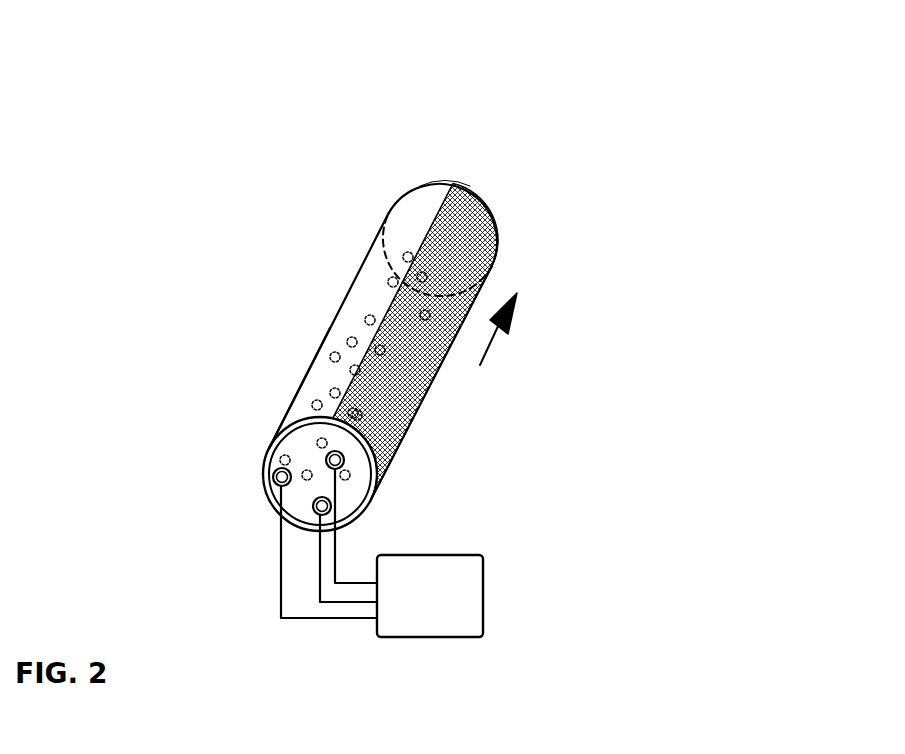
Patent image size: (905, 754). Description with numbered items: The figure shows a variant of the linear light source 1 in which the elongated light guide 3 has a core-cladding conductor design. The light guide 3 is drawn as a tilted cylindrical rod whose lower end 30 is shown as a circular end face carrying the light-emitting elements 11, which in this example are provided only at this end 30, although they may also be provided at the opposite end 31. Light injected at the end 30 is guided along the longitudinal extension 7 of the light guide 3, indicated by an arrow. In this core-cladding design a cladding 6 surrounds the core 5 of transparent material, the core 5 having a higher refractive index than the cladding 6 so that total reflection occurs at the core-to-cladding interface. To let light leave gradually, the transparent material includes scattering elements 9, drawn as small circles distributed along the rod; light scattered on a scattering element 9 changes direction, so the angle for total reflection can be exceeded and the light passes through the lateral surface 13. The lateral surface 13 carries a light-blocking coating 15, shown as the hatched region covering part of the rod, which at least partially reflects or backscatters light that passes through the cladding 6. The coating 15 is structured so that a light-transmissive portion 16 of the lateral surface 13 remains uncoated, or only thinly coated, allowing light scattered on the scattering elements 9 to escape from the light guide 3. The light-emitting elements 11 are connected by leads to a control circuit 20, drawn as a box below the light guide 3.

The linear light source 1 is at (160, 283).
The light guide 3 is at (403, 197).
The end of light guide 31 is at (444, 182).
The light-transmissive portion 16 is at (375, 258).
The scattering element 9 is at (369, 318).
The light-blocking coating 15 is at (498, 241).
The lateral surface 13 is at (283, 420).
The core 5 is at (273, 444).
The light-emitting element 11 is at (265, 470).
The end of light guide 30 is at (263, 497).
The cladding 6 is at (378, 487).
The control circuit 20 is at (483, 577).
The longitudinal extension of light guide 7 is at (486, 355).